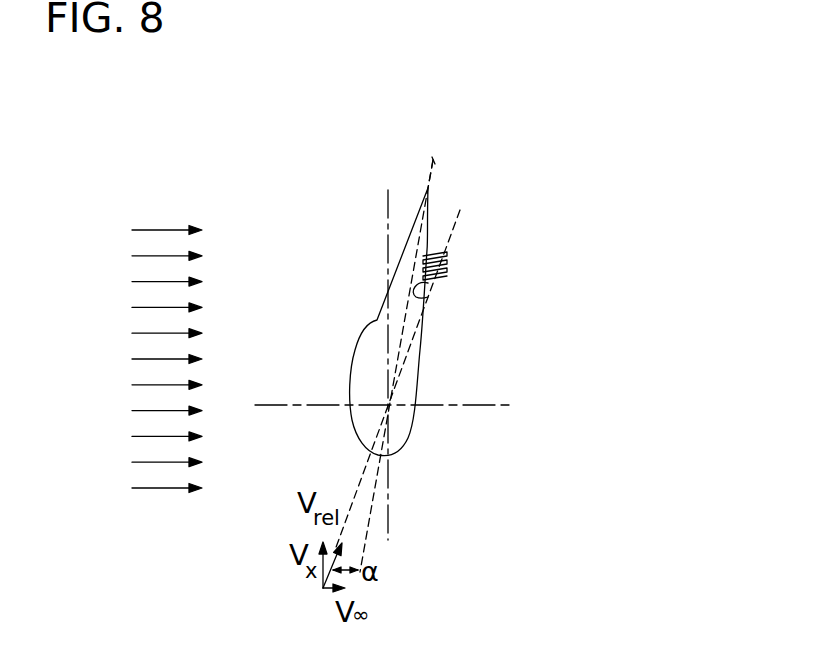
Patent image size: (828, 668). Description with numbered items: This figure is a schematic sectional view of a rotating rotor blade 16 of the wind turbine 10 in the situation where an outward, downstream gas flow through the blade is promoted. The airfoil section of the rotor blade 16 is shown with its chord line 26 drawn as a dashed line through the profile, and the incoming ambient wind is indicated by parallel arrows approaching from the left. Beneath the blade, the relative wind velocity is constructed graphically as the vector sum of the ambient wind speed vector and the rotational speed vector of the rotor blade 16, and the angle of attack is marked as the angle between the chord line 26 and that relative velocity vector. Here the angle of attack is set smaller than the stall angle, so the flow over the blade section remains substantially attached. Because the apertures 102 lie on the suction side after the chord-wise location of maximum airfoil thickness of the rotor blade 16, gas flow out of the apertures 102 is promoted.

The wind turbine 10 is at (432, 344).
The rotor blade 16 is at (472, 297).
The chord line 26 is at (435, 164).
The apertures 102 is at (428, 297).